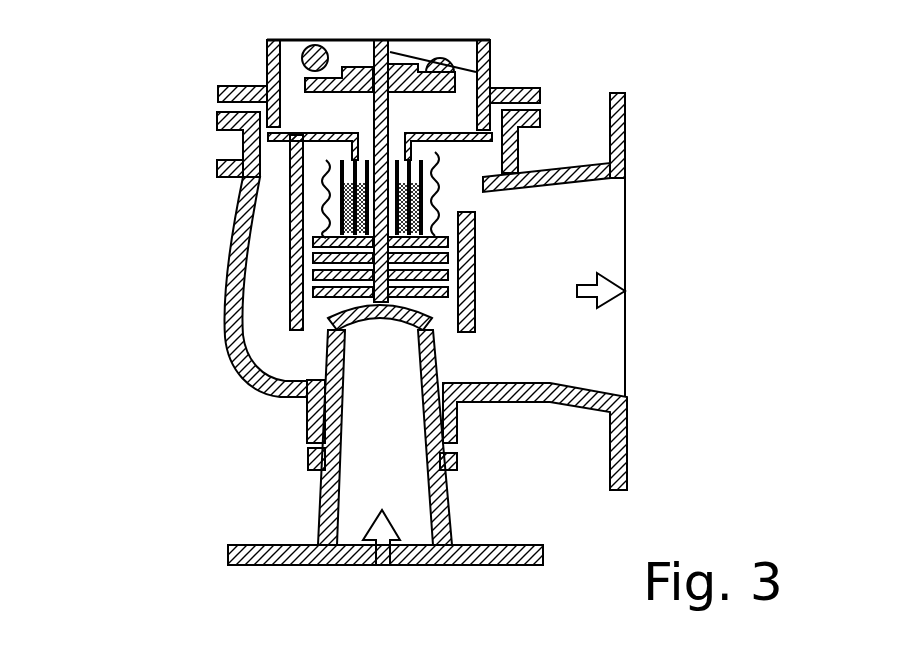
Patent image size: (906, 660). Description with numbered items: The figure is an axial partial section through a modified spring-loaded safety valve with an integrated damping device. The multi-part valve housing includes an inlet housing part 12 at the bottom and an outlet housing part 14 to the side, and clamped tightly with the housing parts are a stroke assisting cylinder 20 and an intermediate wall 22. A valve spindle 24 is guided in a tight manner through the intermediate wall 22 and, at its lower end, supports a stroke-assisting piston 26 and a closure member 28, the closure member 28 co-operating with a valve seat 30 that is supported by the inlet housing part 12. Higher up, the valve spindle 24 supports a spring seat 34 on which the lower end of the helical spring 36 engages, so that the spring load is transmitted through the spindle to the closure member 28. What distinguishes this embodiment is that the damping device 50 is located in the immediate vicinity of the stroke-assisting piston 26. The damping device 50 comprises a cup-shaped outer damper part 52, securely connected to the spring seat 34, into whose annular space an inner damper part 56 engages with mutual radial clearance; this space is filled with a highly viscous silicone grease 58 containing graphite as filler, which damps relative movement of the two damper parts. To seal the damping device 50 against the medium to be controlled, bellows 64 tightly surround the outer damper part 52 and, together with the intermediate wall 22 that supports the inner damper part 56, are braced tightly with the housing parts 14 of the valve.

The inlet housing part 12 is at (327, 500).
The outlet housing part 14 is at (218, 310).
The stroke assisting cylinder 20 is at (290, 254).
The intermediate wall 22 is at (247, 133).
The valve spindle 24 is at (377, 42).
The stroke-assisting piston 26 is at (476, 300).
The closure member 28 is at (432, 318).
The valve seat 30 is at (433, 328).
The spring seat 34 is at (483, 82).
The helical spring 36 is at (477, 40).
The damping device 50 is at (452, 176).
The outer damper part 52 is at (452, 224).
The inner damper part 56 is at (262, 153).
The silicone grease 58 is at (450, 240).
The bellows 64 is at (322, 195).